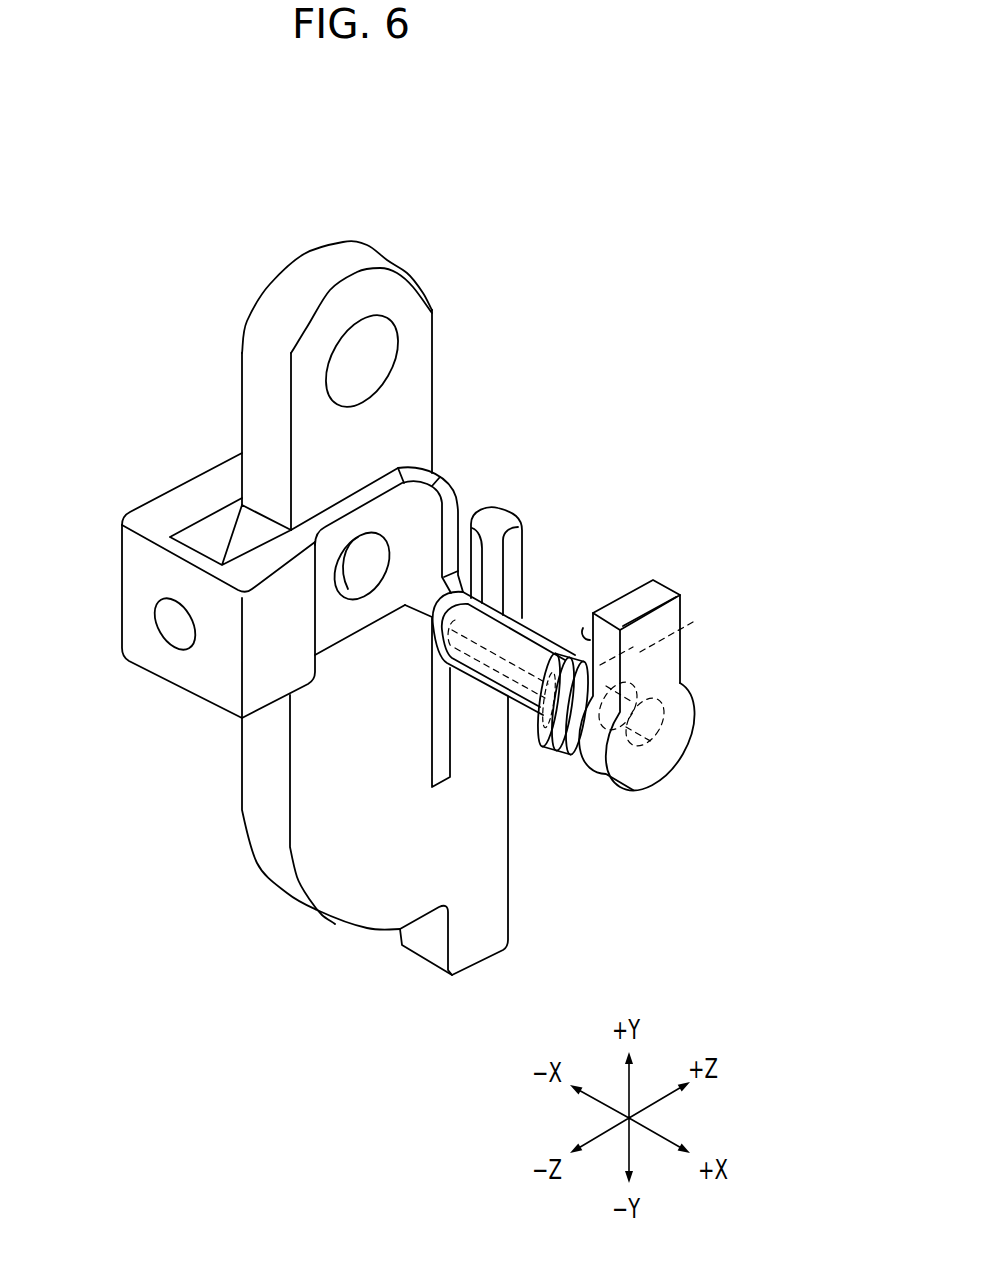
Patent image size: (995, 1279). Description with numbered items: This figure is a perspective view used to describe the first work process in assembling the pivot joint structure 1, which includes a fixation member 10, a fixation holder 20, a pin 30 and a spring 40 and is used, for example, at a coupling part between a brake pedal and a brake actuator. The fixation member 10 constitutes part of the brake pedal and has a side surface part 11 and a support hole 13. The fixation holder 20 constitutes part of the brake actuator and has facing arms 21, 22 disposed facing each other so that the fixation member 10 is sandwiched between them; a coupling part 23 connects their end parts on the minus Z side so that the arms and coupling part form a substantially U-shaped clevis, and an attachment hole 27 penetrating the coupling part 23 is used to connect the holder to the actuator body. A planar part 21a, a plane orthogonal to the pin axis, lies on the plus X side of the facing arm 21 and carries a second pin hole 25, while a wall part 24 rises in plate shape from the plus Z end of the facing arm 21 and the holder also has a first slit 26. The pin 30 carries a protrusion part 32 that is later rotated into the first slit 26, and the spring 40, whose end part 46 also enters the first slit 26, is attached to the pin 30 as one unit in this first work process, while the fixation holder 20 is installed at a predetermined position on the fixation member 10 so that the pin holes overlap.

The pivot joint structure 1 is at (480, 117).
The fixation member 10 is at (439, 254).
The side surface part 11 is at (420, 357).
The support hole 13 is at (345, 365).
The fixation holder 20 is at (161, 737).
The facing arm 21 is at (353, 503).
The planar part 21a is at (330, 537).
The facing arm 22 is at (210, 498).
The coupling part 23 is at (135, 608).
The wall part 24 is at (510, 565).
The second pin hole 25 is at (360, 597).
The first slit 26 is at (477, 494).
The attachment hole 27 is at (173, 640).
The pin 30 is at (645, 782).
The protrusion part 32 is at (658, 580).
The spring 40 is at (560, 755).
The end part 46 is at (693, 622).